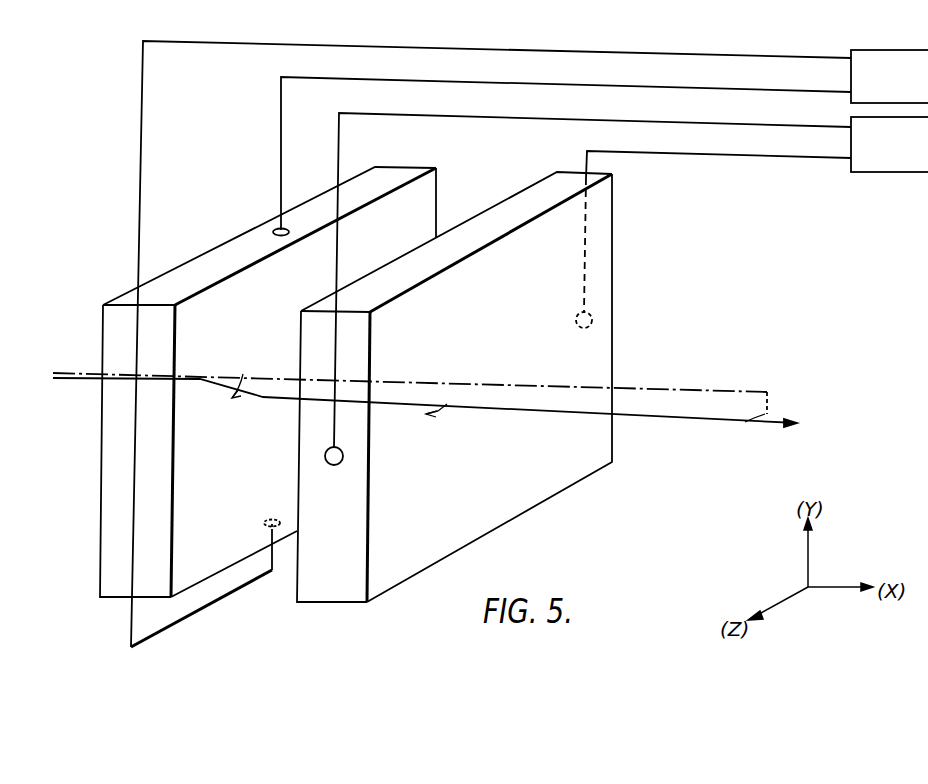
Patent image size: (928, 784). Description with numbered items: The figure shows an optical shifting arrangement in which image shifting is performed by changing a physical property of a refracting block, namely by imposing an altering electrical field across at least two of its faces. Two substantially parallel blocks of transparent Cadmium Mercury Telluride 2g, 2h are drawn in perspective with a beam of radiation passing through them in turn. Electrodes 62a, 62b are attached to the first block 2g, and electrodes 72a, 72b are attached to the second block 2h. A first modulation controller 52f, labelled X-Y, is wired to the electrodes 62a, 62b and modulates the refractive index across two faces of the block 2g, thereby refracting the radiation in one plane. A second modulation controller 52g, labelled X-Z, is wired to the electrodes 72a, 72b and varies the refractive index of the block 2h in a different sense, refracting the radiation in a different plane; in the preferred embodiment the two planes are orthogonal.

The block of transparent Cadmium Mercury Telluride 2g is at (223, 258).
The block of transparent Cadmium Mercury Telluride 2h is at (600, 347).
The first modulation controller 52f is at (898, 32).
The second modulation controller 52g is at (882, 172).
The electrode 62a is at (281, 142).
The electrode 62b is at (228, 596).
The electrode 72a is at (585, 226).
The electrode 72b is at (332, 430).